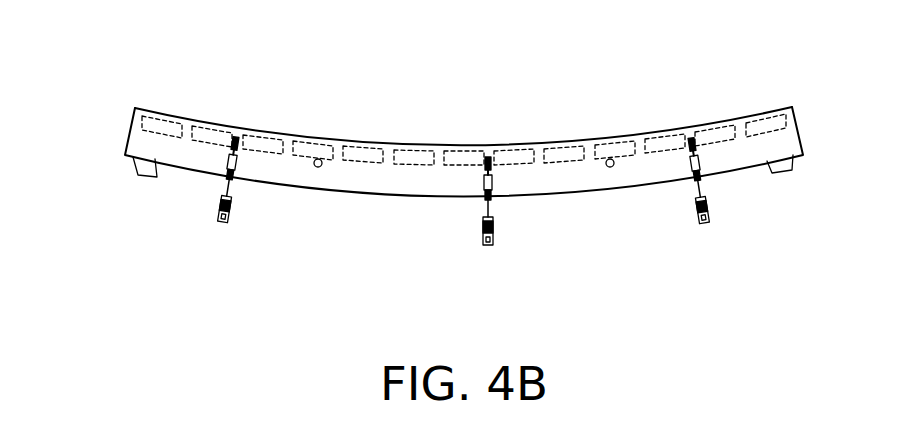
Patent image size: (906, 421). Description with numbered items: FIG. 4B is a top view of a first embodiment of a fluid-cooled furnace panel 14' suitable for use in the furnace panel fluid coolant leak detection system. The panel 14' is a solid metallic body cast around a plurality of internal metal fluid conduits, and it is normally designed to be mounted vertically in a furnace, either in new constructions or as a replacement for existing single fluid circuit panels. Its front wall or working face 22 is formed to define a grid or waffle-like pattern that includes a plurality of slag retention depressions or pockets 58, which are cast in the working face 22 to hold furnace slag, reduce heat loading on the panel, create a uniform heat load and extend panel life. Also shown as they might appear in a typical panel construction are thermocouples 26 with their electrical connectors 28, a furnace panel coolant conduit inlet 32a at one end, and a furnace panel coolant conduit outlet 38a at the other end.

The furnace panel 14' is at (450, 115).
The working face 22 is at (589, 139).
The thermocouple 26 is at (238, 158).
The electrical connector 28 is at (218, 214).
The furnace panel coolant conduit inlet 32a is at (132, 174).
The furnace panel coolant conduit outlet 38a is at (792, 172).
The slag retention pocket 58 is at (358, 147).